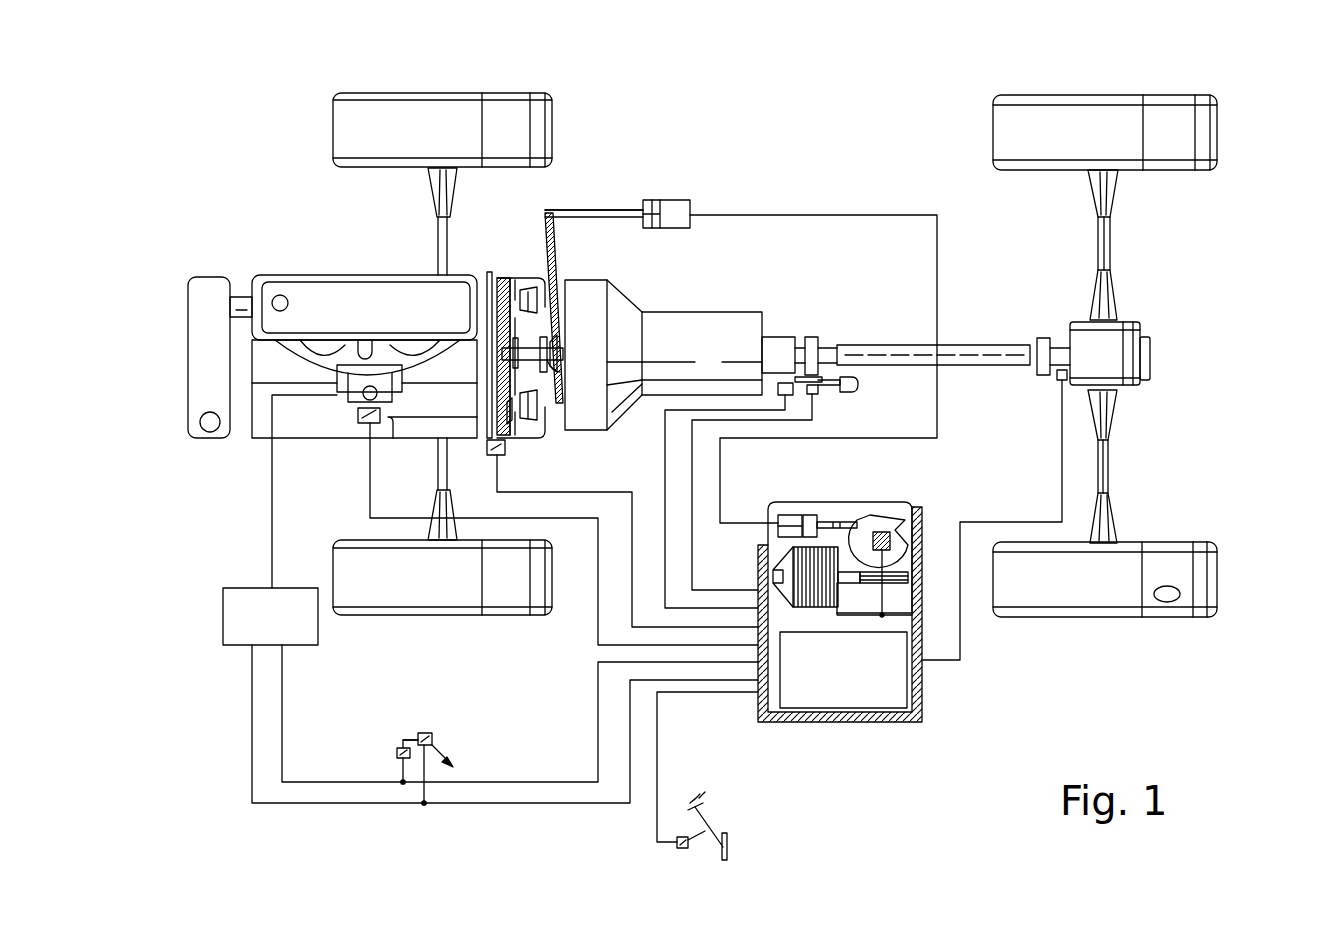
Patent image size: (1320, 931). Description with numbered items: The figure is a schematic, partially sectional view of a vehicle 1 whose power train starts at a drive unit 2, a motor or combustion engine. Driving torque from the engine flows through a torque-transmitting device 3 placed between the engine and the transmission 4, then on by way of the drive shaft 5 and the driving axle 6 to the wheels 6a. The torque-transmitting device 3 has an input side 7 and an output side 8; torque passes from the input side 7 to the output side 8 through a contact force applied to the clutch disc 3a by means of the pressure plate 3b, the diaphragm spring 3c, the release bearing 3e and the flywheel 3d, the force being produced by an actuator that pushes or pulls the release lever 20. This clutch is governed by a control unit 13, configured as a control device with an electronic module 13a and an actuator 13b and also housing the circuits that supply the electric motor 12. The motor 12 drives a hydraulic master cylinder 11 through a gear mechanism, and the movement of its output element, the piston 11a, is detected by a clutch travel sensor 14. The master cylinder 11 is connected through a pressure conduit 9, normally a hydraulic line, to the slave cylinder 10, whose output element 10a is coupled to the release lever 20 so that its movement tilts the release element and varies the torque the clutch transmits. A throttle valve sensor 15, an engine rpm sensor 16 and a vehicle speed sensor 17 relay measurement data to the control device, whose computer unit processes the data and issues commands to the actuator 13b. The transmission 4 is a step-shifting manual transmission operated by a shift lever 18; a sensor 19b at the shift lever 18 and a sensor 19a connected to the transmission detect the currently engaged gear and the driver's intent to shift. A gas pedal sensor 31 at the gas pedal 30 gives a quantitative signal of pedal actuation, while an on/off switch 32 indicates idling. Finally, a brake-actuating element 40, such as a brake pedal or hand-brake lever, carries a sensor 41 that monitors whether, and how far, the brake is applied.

The vehicle 1 is at (806, 116).
The drive unit 2 is at (305, 296).
The torque-transmitting device 3 is at (513, 283).
The clutch disc 3a is at (520, 418).
The pressure plate 3b is at (532, 292).
The diaphragm spring 3c is at (537, 317).
The flywheel 3d is at (507, 407).
The release bearing 3e is at (552, 362).
The transmission 4 is at (718, 367).
The drive shaft 5 is at (982, 354).
The driving axle 6 is at (1105, 470).
The wheels 6a is at (1183, 135).
The input side 7 is at (488, 276).
The output side 8 is at (570, 286).
The pressure conduit 9 is at (757, 215).
The slave cylinder 10 is at (672, 202).
The output element of the slave cylinder 10a is at (598, 210).
The master cylinder 11 is at (790, 522).
The piston 11a is at (810, 520).
The electric motor 12 is at (790, 553).
The control unit 13 is at (760, 700).
The electronic module 13a is at (861, 680).
The actuator 13b is at (893, 505).
The clutch travel sensor 14 is at (885, 540).
The throttle valve sensor 15 is at (358, 418).
The engine rpm sensor 16 is at (490, 455).
The vehicle speed sensor 17 is at (1057, 385).
The shift lever 18 is at (815, 375).
The sensor 19a is at (787, 383).
The sensor 19b is at (820, 390).
The release lever 20 is at (553, 232).
The gas pedal 30 is at (407, 722).
The gas pedal sensor 31 is at (400, 748).
The on/off switch 32 is at (432, 738).
The brake-actuating element 40 is at (286, 631).
The sensor 41 is at (677, 845).